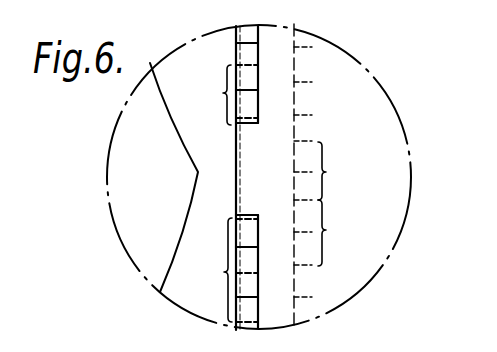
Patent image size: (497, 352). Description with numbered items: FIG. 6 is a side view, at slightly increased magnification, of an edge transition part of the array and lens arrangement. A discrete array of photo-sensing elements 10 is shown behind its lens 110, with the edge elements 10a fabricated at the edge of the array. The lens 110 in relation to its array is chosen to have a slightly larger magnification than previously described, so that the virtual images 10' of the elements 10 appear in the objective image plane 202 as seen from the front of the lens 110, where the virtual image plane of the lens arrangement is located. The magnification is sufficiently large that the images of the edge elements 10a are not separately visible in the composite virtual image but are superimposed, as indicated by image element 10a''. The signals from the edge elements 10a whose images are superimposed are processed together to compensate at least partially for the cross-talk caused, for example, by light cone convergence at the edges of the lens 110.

The photo-sensing element 10 is at (217, 178).
The edge element 10a is at (204, 189).
The lens 110 is at (187, 130).
The image plane of the objective 202 is at (294, 88).
The superimposed image element 10a'' is at (355, 168).
The virtual image of element 10' is at (347, 228).